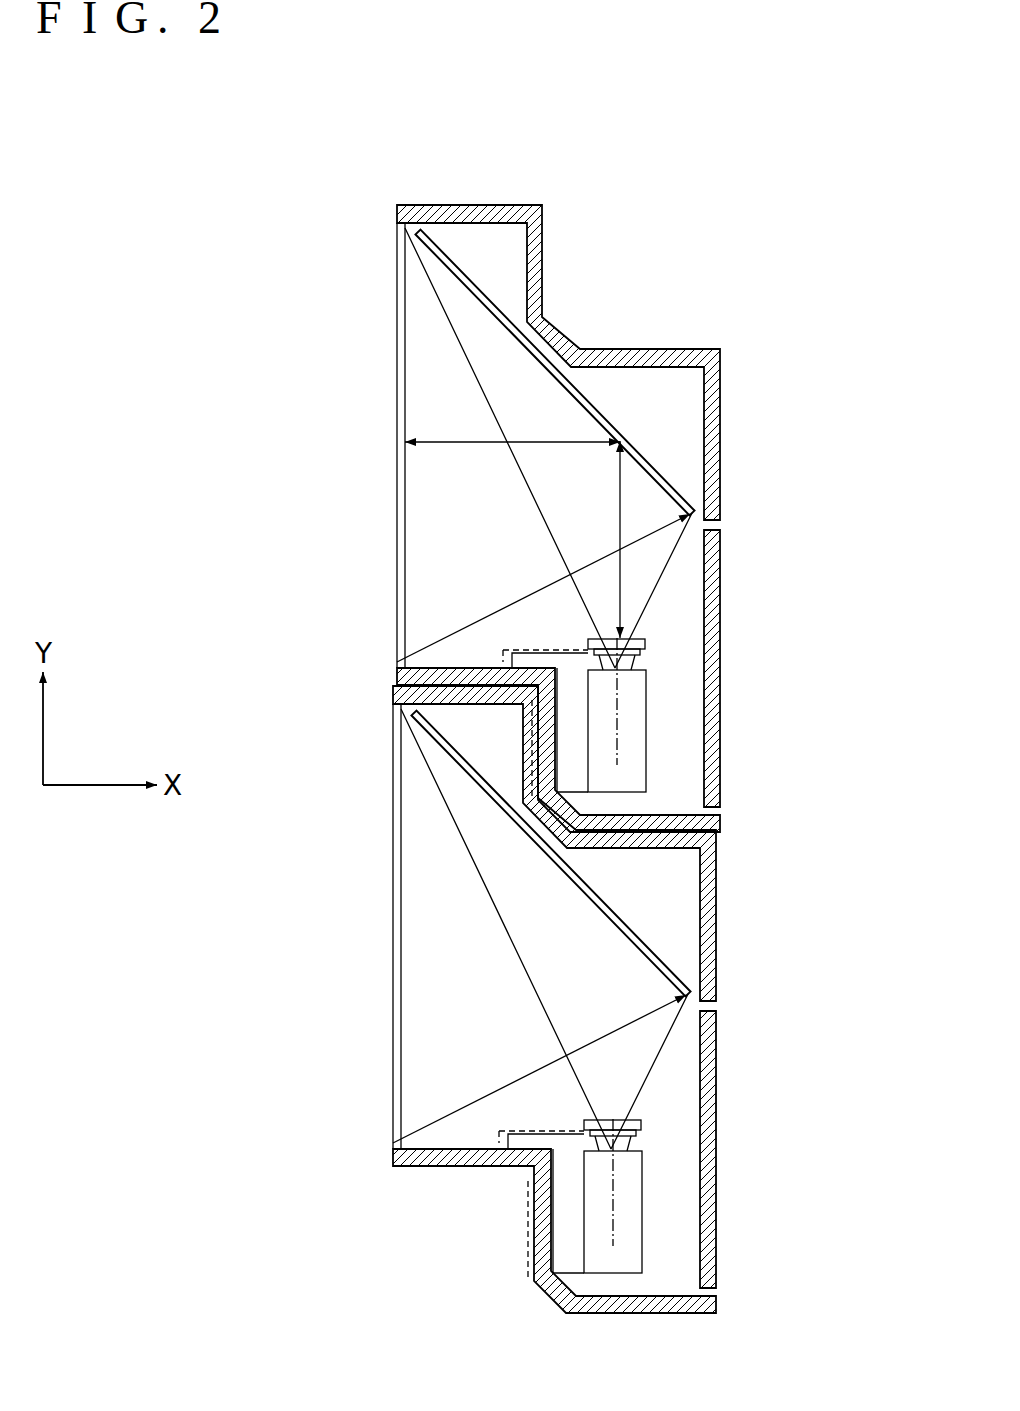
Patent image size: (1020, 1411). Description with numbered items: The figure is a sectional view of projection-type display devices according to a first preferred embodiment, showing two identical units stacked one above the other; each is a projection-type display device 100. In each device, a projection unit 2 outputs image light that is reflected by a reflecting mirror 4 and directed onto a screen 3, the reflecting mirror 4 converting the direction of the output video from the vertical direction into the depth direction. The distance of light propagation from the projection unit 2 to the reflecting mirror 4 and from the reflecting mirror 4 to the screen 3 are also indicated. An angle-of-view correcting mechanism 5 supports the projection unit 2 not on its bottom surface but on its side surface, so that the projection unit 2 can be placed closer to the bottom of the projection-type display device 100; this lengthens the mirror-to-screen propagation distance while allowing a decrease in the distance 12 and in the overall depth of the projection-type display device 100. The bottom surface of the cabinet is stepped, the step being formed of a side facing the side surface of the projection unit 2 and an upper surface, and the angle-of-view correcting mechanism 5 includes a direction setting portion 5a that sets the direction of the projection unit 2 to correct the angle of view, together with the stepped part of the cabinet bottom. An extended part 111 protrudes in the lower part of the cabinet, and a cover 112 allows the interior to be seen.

The projection unit 2 is at (647, 703).
The screen 3 is at (397, 495).
The reflecting mirror 4 is at (658, 474).
The angle-of-view correcting mechanism 5 is at (503, 660).
The direction setting portion 5a is at (571, 682).
The distance 12 is at (722, 354).
The projection-type display device 100 is at (599, 759).
The extended part 111 is at (673, 795).
The cover 112 is at (720, 600).